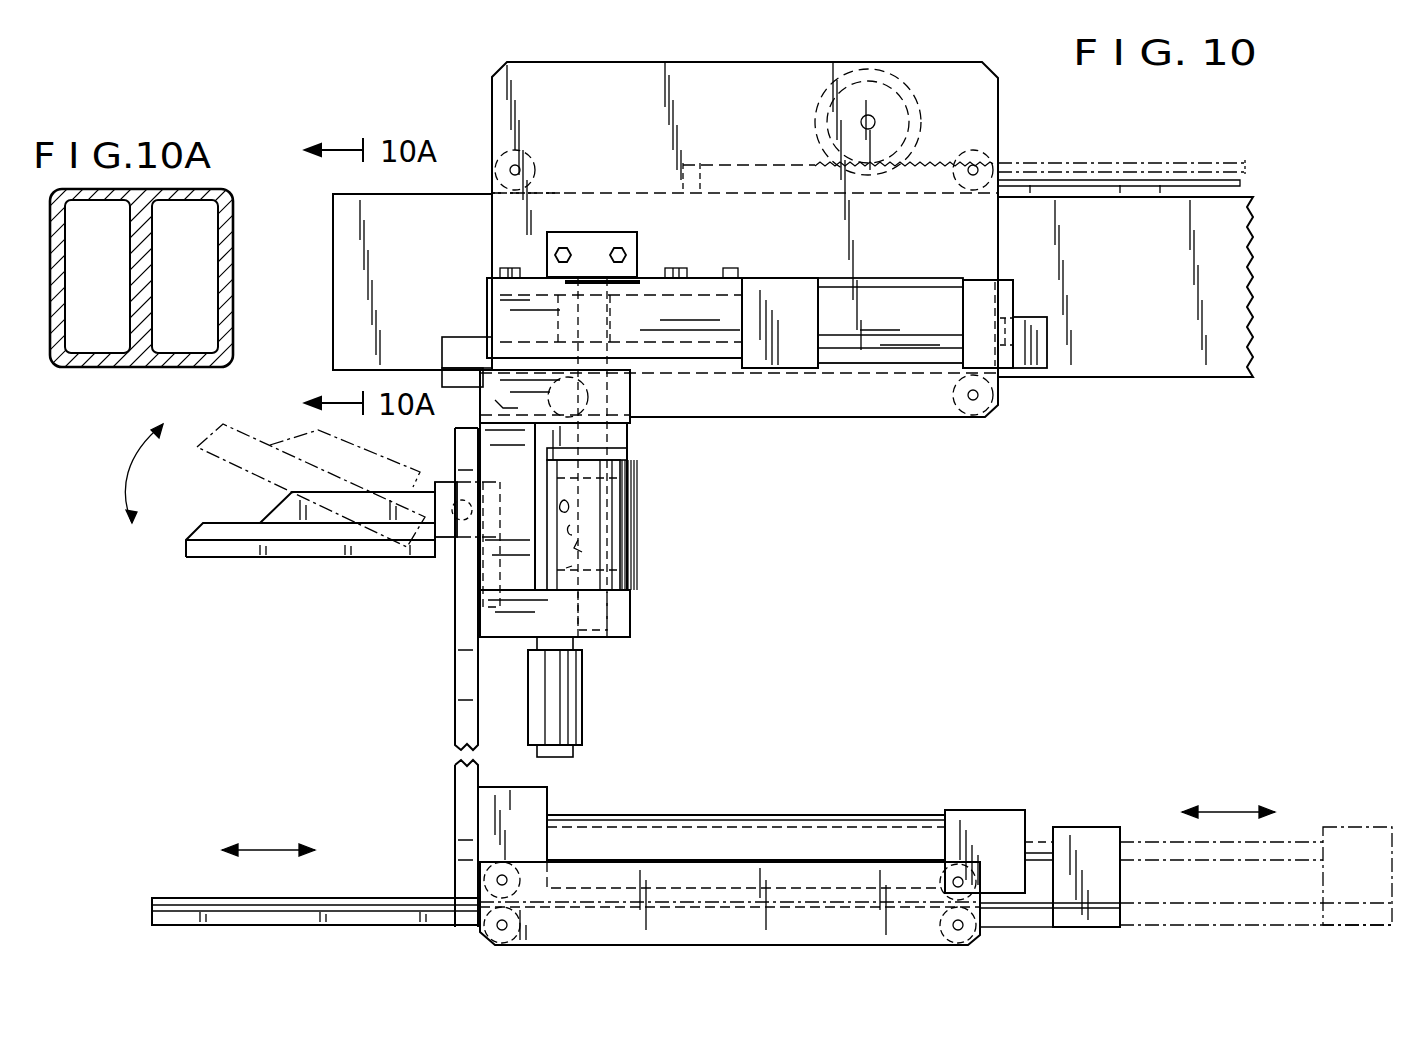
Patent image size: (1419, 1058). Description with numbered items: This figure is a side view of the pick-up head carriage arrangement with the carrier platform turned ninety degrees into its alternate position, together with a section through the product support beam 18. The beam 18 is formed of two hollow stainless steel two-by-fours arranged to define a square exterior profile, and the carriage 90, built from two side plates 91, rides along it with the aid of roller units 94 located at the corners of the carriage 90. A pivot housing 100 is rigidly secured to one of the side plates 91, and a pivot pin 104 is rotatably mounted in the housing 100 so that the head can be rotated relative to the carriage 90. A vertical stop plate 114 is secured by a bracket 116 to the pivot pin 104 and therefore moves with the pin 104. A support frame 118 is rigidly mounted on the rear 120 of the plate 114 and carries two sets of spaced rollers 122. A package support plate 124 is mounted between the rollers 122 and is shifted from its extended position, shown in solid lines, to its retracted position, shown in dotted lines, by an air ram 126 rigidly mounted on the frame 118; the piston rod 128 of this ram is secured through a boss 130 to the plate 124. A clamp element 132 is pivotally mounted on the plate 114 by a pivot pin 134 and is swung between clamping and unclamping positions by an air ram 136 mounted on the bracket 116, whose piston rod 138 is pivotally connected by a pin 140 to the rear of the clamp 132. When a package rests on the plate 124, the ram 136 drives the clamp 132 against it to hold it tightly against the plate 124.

In FIG. 10A, the product support beam 18 is at (233, 257).
In FIG. 10, the product support beam 18 is at (1138, 366).
In FIG. 10, the carriage 90 is at (685, 62).
In FIG. 10, the side plate 91 is at (554, 77).
In FIG. 10, the roller unit 94 is at (905, 83).
In FIG. 10, the pivot housing 100 is at (648, 278).
In FIG. 10, the pivot pin 104 is at (590, 280).
In FIG. 10, the vertical stop plate 114 is at (465, 678).
In FIG. 10, the bracket 116 is at (625, 400).
In FIG. 10, the support frame 118 is at (693, 815).
In FIG. 10, the rear of plate 120 is at (478, 710).
In FIG. 10, the rollers 122 is at (518, 940).
In FIG. 10, the package support plate 124 is at (290, 898).
In FIG. 10, the air ram 126 is at (885, 815).
In FIG. 10, the piston rod 128 is at (1140, 842).
In FIG. 10, the boss 130 is at (1340, 827).
In FIG. 10, the clamp element 132 is at (203, 538).
In FIG. 10, the pivot pin 134 is at (447, 540).
In FIG. 10, the air ram 136 is at (582, 735).
In FIG. 10, the piston rod 138 is at (573, 642).
In FIG. 10, the pin 140 is at (577, 517).